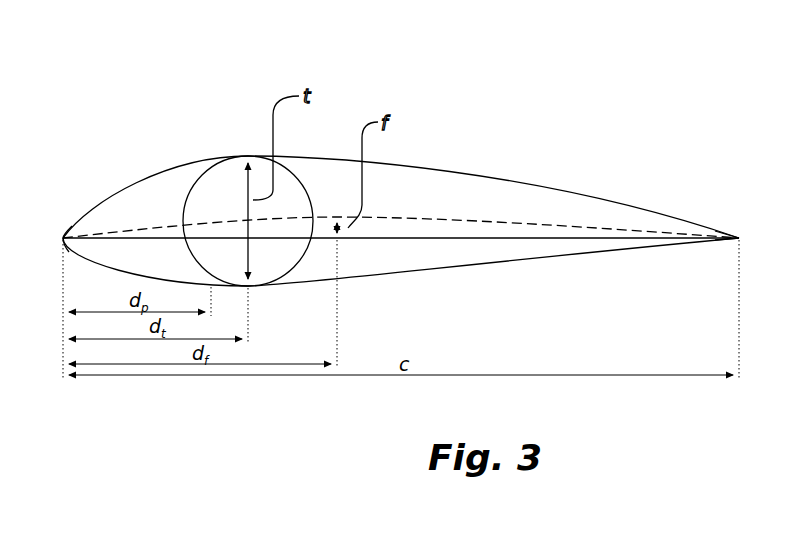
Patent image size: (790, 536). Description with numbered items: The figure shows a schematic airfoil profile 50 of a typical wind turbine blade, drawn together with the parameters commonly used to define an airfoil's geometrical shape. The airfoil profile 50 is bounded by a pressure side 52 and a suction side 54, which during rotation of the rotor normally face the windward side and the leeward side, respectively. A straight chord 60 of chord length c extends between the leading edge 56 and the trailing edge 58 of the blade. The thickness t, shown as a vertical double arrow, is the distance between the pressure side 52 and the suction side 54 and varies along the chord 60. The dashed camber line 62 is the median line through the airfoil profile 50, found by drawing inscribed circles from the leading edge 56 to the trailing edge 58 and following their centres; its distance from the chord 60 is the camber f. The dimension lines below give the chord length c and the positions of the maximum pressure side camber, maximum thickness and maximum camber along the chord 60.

The airfoil profile 50 is at (386, 178).
The pressure side 52 is at (535, 262).
The suction side 54 is at (484, 172).
The leading edge 56 is at (63, 238).
The trailing edge 58 is at (739, 238).
The chord 60 is at (567, 238).
The camber line 62 is at (393, 218).